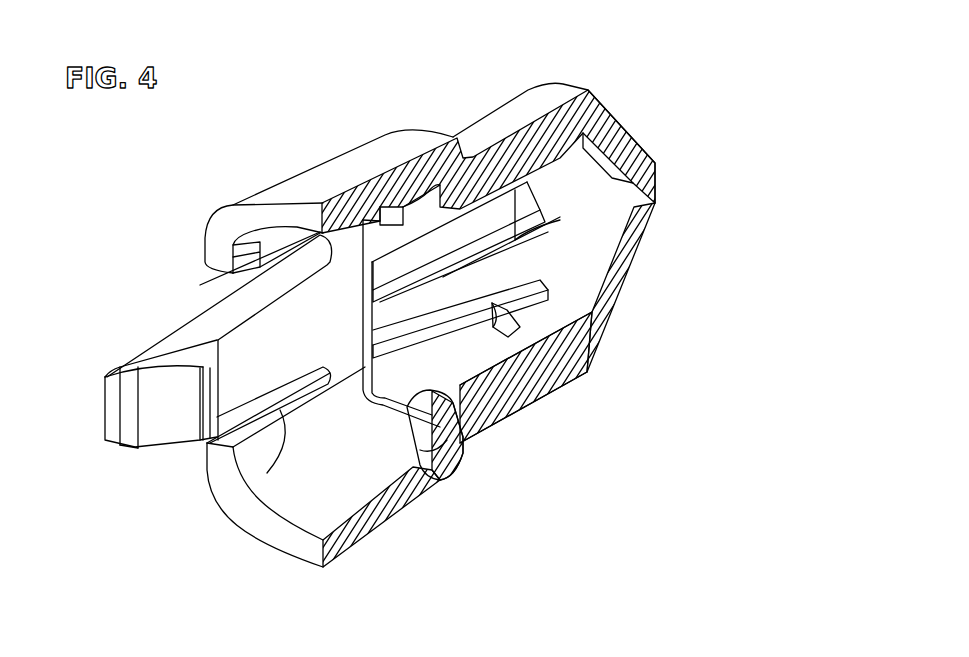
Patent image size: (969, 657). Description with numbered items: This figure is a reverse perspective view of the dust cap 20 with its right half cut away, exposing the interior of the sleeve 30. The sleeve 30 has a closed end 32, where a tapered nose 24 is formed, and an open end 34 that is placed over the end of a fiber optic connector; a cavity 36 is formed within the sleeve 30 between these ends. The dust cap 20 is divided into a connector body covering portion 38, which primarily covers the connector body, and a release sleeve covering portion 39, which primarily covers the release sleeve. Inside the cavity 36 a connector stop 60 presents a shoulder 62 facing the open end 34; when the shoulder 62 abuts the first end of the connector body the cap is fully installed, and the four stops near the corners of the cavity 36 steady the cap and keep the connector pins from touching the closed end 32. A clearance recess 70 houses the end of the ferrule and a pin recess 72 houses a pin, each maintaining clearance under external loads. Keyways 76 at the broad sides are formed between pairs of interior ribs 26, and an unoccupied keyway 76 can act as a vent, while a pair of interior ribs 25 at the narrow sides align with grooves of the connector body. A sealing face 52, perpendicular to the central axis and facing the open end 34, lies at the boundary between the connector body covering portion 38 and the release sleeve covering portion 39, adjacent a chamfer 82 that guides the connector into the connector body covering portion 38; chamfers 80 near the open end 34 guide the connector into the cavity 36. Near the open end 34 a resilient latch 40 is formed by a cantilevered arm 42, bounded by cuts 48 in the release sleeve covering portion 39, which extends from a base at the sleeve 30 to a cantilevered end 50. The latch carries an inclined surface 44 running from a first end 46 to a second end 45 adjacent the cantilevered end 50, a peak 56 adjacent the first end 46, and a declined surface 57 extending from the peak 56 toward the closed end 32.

The dust cap 20 is at (673, 77).
The tapered nose 24 is at (600, 107).
The interior ribs 25 is at (393, 400).
The interior ribs 26 is at (548, 246).
The sleeve 30 is at (507, 393).
The closed end 32 is at (633, 152).
The open end 34 is at (358, 497).
The cavity 36 is at (490, 222).
The connector body covering portion 38 is at (488, 422).
The release sleeve covering portion 39 is at (327, 170).
The resilient latch 40 is at (175, 342).
The cantilevered arm 42 is at (223, 310).
The inclined surface 44 is at (157, 435).
The second end 45 is at (122, 430).
The first end 46 is at (197, 430).
The cuts 48 is at (285, 440).
The cantilevered end 50 is at (108, 393).
The sealing face 52 is at (420, 437).
The peak 56 is at (203, 383).
The declined surface 57 is at (212, 353).
The connector stop 60 is at (543, 307).
The shoulder 62 is at (520, 390).
The clearance recess 70 is at (540, 193).
The pin recess 72 is at (520, 318).
The keyway 76 is at (520, 222).
The chamfer 80 is at (285, 510).
The chamfer 82 is at (440, 423).